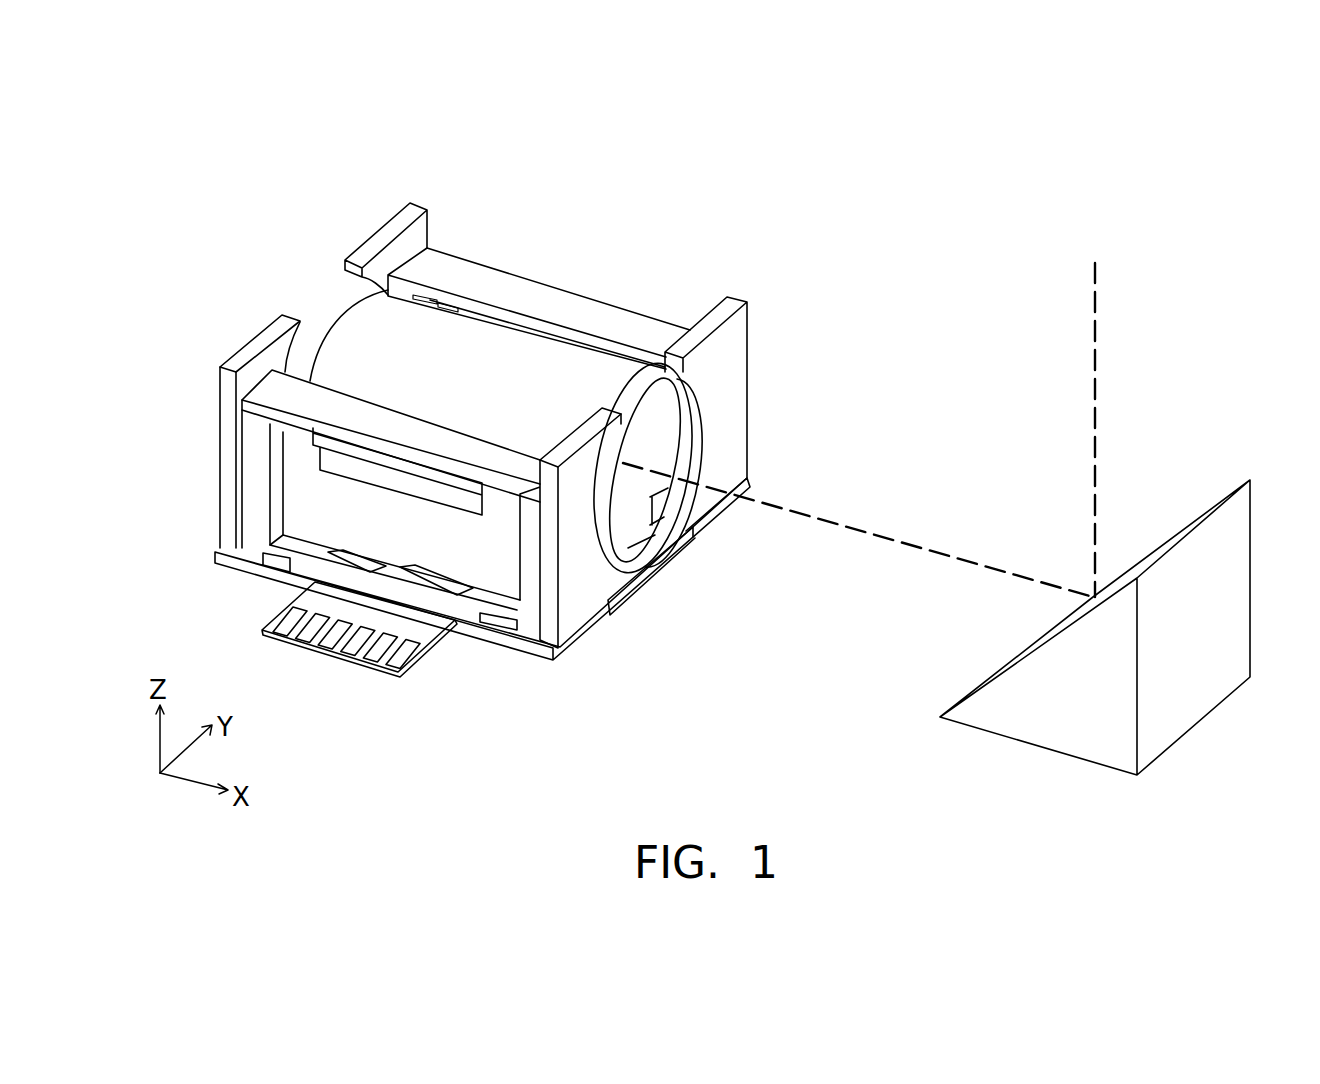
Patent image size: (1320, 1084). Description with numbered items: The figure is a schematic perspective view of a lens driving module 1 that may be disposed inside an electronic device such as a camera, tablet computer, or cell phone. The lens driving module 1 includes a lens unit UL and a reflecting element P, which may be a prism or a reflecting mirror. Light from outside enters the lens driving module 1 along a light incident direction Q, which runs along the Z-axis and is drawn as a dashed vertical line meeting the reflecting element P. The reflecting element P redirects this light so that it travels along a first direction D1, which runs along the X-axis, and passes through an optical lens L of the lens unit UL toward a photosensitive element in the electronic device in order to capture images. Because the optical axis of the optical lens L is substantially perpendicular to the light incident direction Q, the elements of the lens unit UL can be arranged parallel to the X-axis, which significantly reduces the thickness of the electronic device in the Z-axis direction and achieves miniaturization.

The lens driving module 1 is at (172, 147).
The lens unit UL is at (369, 219).
The optical lens L is at (353, 330).
The first direction D1 is at (906, 550).
The light incident direction Q is at (1097, 303).
The reflecting element P is at (1062, 723).